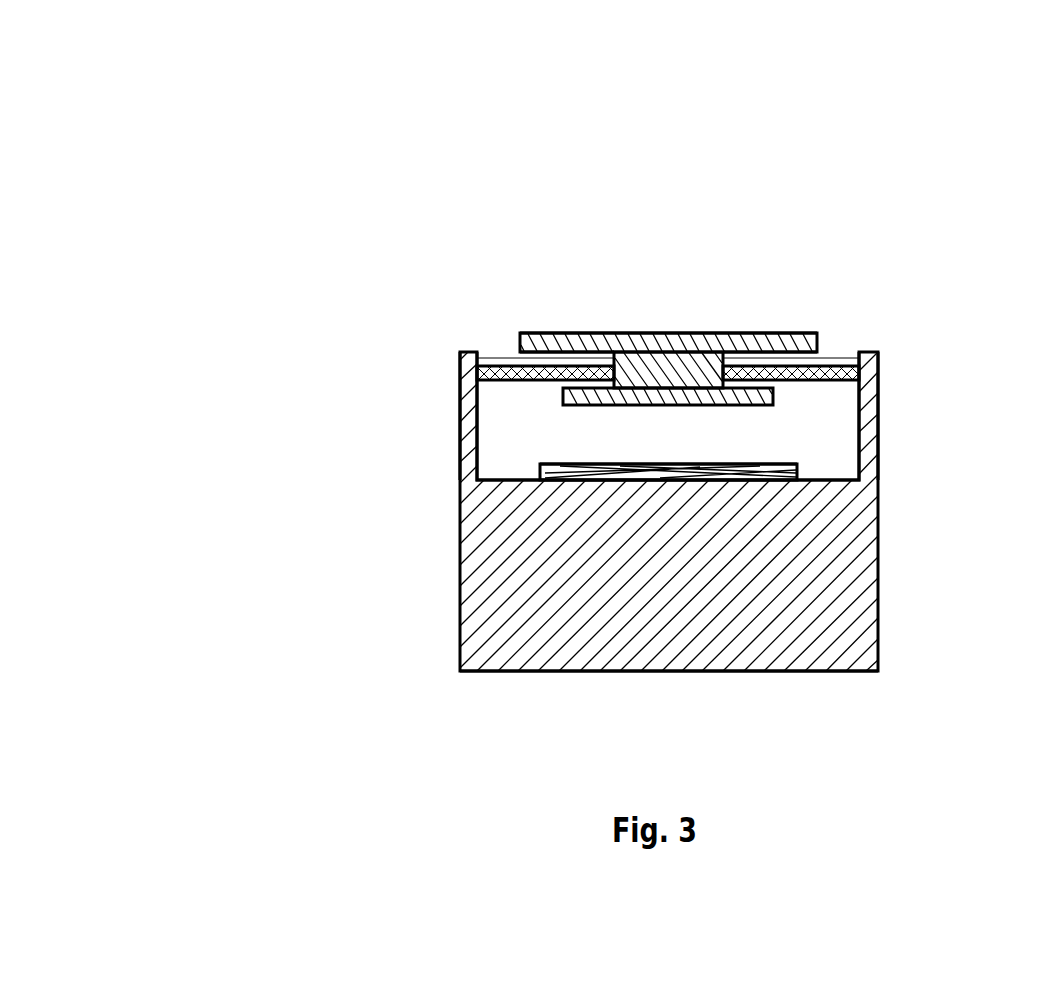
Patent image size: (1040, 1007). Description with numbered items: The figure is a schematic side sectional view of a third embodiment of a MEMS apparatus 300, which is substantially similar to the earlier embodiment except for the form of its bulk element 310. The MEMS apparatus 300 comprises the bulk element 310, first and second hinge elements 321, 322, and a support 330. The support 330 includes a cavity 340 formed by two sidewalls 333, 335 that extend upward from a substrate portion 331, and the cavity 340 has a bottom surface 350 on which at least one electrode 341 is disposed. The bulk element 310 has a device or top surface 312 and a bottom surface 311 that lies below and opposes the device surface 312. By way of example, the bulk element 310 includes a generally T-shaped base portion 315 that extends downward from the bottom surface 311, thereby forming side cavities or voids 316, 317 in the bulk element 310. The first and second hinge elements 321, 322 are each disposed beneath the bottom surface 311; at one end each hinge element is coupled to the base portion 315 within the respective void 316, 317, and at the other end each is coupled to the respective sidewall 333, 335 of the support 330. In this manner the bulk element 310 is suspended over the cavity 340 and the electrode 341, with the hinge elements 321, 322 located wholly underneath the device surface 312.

The MEMS apparatus 300 is at (232, 163).
The bulk element 310 is at (603, 330).
The bottom surface 311 is at (545, 358).
The device surface 312 is at (737, 333).
The base portion 315 is at (665, 362).
The void 316 is at (573, 358).
The void 317 is at (765, 358).
The first hinge element 321 is at (533, 382).
The second hinge element 322 is at (800, 382).
The support 330 is at (445, 566).
The substrate portion 331 is at (688, 671).
The sidewall 333 is at (460, 393).
The sidewall 335 is at (879, 378).
The cavity 340 is at (812, 464).
The electrode 341 is at (688, 463).
The bottom surface 350 is at (511, 478).